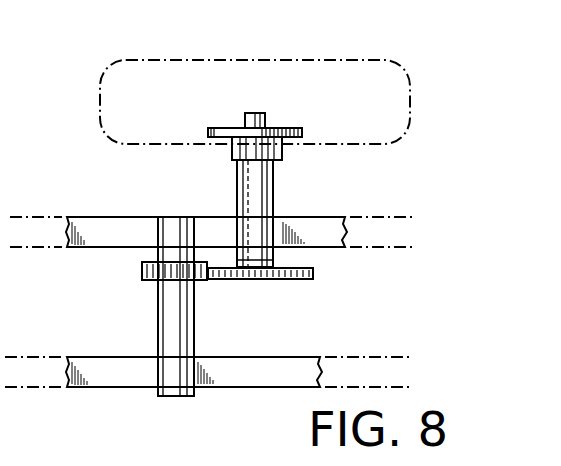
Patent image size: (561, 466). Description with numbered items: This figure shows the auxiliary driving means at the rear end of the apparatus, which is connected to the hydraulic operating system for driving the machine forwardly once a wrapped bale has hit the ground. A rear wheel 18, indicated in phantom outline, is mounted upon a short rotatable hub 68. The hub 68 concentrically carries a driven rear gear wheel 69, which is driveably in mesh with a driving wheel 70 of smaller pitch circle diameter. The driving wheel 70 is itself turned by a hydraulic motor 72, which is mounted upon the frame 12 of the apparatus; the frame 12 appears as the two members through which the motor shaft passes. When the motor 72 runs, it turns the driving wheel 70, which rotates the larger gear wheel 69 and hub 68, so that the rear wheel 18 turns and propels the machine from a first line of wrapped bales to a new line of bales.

The frame 12 is at (118, 217).
The rear wheel 18 is at (411, 109).
The rotatable hub 68 is at (283, 128).
The driven rear gear wheel 69 is at (312, 280).
The driving wheel 70 is at (142, 268).
The hydraulic motor 72 is at (195, 332).